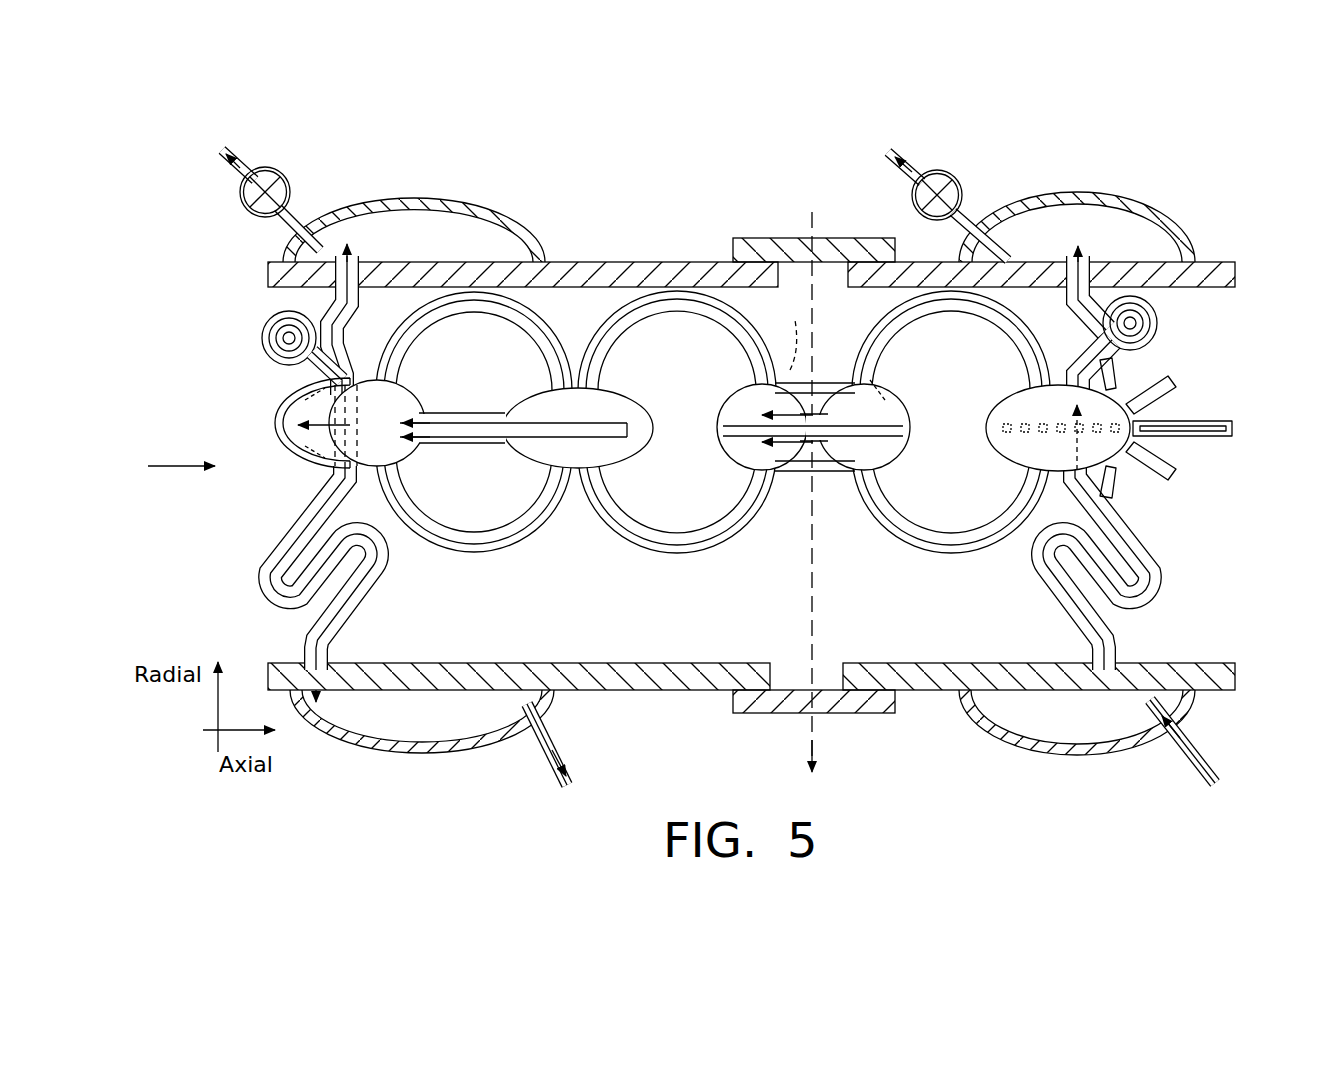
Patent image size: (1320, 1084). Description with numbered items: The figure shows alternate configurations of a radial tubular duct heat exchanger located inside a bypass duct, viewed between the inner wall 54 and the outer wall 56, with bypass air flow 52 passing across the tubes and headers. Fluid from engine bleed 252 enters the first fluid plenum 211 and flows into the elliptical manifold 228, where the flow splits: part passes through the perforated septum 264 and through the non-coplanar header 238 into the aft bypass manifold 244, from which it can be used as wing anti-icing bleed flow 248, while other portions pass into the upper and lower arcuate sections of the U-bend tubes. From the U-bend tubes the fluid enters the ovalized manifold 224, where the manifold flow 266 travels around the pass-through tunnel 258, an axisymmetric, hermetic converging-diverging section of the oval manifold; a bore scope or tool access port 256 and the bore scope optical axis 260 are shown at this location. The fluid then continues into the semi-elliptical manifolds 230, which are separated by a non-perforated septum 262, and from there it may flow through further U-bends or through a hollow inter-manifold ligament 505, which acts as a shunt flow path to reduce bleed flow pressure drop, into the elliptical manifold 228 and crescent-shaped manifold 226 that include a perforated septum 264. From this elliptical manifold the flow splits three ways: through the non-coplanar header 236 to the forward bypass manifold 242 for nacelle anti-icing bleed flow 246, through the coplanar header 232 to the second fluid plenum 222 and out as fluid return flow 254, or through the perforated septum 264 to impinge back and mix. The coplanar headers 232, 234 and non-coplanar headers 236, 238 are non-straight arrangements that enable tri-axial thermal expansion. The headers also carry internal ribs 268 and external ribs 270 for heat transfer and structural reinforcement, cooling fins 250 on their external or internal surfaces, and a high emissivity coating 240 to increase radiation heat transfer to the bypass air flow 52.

The bypass air flow 52 is at (171, 448).
The inner wall 54 is at (592, 688).
The upper wall 56 is at (578, 270).
The first fluid plenum 211 is at (1077, 723).
The second fluid plenum 222 is at (422, 723).
The ovalized manifold 224 is at (752, 392).
The crescent-shaped manifold 226 is at (310, 400).
The elliptical manifold 228 is at (395, 395).
The semi-elliptical manifold 230 is at (635, 418).
The coplanar header 232 is at (280, 540).
The coplanar header 234 is at (1152, 588).
The non-coplanar header 236 is at (275, 318).
The non-coplanar header 238 is at (1158, 330).
The high emissivity coating 240 is at (1160, 318).
The upper left chamber 242 is at (415, 230).
The aft bypass manifold 244 is at (1077, 227).
The nacelle anti-icing bleed flow 246 is at (222, 182).
The wing anti-icing bleed flow 248 is at (912, 168).
The cooling fins 250 is at (1130, 390).
The engine bleed 252 is at (1210, 758).
The fluid return flow 254 is at (545, 770).
The bore scope or tool access port 256 is at (825, 286).
The pass-through tunnel 258 is at (790, 495).
The bore scope optical axis 260 is at (822, 750).
The non-perforated septum 262 is at (555, 380).
The perforated septum 264 is at (340, 345).
The manifold flow 266 is at (880, 412).
The internal ribs 268 is at (868, 385).
The external ribs 270 is at (773, 330).
The hollow inter-manifold ligament 505 is at (452, 455).